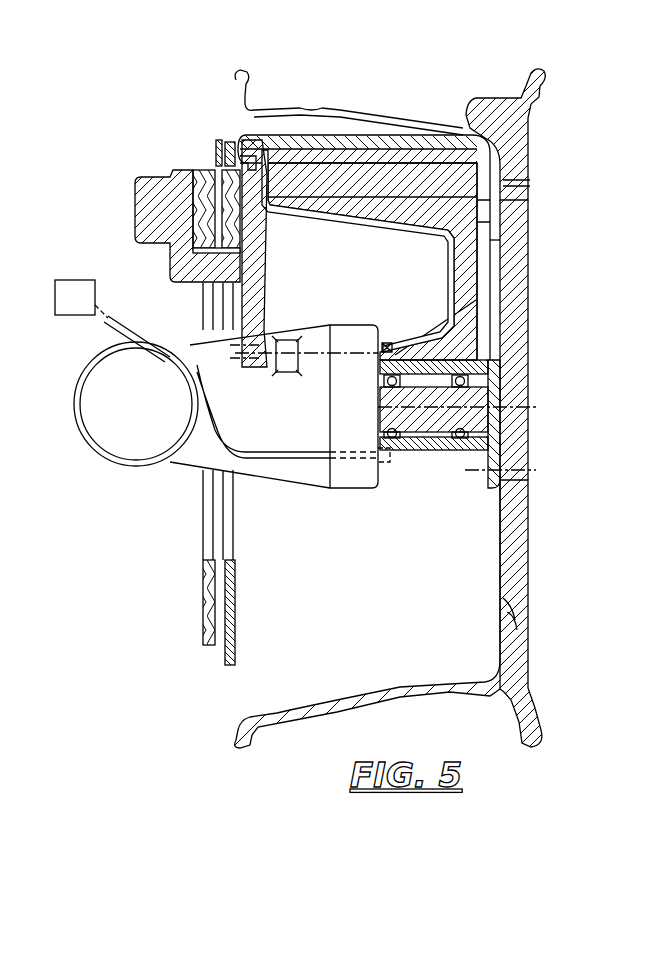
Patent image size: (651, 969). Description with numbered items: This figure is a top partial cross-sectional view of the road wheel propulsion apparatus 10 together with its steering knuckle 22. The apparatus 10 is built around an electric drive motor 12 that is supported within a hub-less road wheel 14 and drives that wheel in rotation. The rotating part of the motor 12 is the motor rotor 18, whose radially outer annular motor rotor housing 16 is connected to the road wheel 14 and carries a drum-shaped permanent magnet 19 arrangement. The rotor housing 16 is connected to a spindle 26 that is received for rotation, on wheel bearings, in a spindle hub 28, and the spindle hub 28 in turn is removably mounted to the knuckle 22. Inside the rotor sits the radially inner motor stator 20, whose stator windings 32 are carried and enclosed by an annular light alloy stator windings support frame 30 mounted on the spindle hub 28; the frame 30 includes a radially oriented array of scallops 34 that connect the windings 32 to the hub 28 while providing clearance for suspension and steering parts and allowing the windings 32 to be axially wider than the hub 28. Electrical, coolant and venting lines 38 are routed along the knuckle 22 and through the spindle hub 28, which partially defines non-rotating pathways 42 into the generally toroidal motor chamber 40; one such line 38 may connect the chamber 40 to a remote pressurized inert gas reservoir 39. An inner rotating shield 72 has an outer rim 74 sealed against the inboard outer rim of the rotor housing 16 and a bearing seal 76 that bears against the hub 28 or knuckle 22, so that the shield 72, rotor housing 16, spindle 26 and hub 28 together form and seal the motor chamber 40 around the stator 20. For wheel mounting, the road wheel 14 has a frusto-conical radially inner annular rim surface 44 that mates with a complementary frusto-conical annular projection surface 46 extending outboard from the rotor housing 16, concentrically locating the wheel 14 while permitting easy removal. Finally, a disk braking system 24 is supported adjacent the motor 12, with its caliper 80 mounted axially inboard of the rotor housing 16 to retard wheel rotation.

The road wheel propulsion apparatus 10 is at (439, 95).
The electric drive motor 12 is at (538, 268).
The road wheel 14 is at (533, 110).
The motor rotor housing 16 is at (524, 556).
The motor rotor 18 is at (323, 136).
The drum-shaped permanent magnet 19 is at (452, 150).
The motor stator 20 is at (460, 185).
The steering knuckle 22 is at (182, 470).
The disk braking system 24 is at (176, 190).
The spindle 26 is at (485, 396).
The spindle hub 28 is at (460, 360).
The stator windings support frame 30 is at (482, 312).
The stator windings 32 is at (376, 178).
The scallops 34 is at (480, 222).
The electrical and/or fluid passageways 38 is at (282, 462).
The remote pressurized inert gas reservoir 39 is at (84, 280).
The motor chamber 40 is at (505, 255).
The non-rotating pathways 42 is at (388, 482).
The frusto-conical radially inner annular rim surface 44 is at (520, 610).
The frusto-conical annular projection surface 46 is at (516, 622).
The inner rotating shield 72 is at (388, 240).
The outer rim 74 is at (250, 150).
The bearing seal 76 is at (388, 342).
The caliper 80 is at (137, 200).